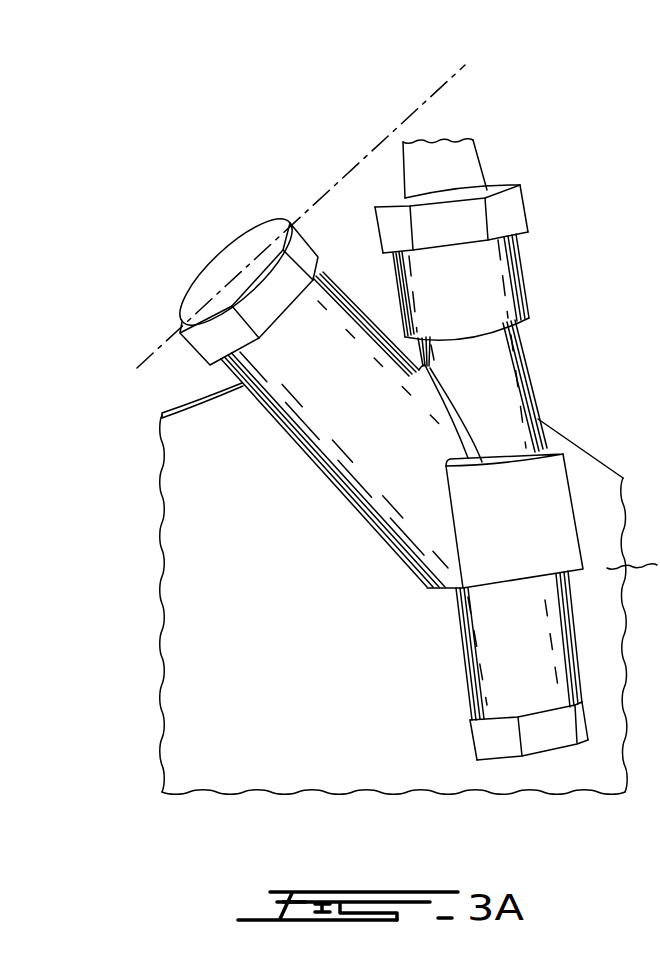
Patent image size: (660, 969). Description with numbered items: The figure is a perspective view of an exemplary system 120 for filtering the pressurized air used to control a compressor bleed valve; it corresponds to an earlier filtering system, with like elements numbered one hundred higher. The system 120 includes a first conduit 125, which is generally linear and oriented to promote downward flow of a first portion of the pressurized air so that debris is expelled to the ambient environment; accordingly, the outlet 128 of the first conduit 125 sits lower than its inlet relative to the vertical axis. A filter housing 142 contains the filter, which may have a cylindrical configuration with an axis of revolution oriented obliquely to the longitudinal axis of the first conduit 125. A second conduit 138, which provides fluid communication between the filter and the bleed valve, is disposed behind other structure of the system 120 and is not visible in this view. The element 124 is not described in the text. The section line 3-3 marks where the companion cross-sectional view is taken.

The system 120 is at (362, 446).
The hex nut fitting 124 is at (553, 191).
The first conduit 125 is at (498, 391).
The outlet 128 is at (546, 782).
The second conduit 138 is at (343, 530).
The filter housing 142 is at (330, 407).
The line 3- 3 is at (96, 364).